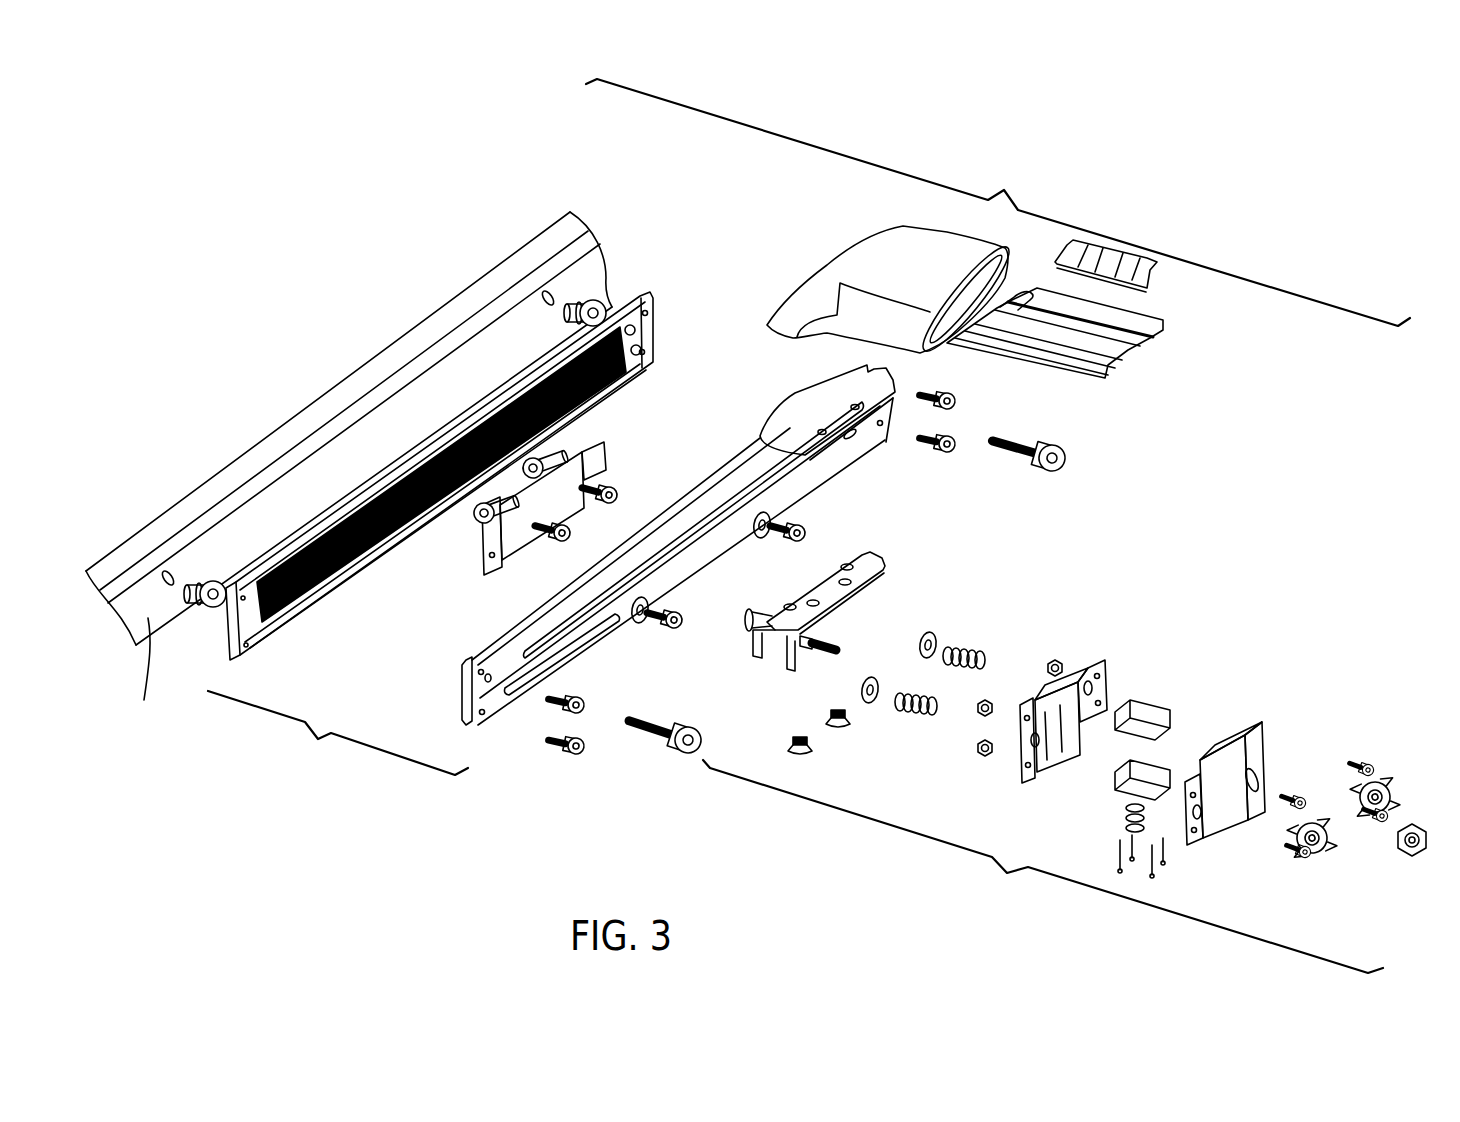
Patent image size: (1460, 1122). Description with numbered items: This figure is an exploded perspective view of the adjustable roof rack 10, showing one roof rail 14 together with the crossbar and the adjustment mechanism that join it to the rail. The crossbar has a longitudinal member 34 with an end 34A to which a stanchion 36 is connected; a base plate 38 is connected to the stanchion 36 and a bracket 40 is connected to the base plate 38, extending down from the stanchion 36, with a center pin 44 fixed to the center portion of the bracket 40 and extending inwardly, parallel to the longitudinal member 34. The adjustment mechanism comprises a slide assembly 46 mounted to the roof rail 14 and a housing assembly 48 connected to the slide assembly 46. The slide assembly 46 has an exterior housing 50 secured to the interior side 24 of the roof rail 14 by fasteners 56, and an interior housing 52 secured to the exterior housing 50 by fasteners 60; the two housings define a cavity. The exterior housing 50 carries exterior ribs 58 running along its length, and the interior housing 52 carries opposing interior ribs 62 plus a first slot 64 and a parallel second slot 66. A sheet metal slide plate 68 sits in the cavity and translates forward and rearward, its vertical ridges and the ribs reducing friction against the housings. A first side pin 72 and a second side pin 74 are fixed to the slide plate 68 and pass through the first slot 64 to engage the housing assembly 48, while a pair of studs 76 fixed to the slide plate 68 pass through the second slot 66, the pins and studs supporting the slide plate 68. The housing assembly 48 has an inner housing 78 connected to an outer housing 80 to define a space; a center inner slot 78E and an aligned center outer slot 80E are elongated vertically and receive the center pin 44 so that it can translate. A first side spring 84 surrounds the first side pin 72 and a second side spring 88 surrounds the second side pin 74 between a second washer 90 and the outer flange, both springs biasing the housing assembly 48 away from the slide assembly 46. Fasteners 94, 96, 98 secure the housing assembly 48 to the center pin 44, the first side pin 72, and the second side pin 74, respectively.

The roof rack 10 is at (998, 202).
The roof rail 14 is at (322, 402).
The interior side 24 is at (147, 675).
The longitudinal member 34 is at (1098, 384).
The end 34A is at (963, 352).
The stanchion 36 is at (845, 255).
The base plate 38 is at (790, 410).
The bracket 40 is at (870, 555).
The center pin 44 is at (845, 640).
The slide assembly 46 is at (338, 736).
The housing assembly 48 is at (1043, 866).
The exterior housing 50 is at (238, 668).
The interior housing 52 is at (462, 712).
The fasteners 56 is at (588, 300).
The exterior ribs 58 is at (295, 625).
The fasteners 60 is at (952, 410).
The interior ribs 62 is at (515, 650).
The first slot 64 is at (715, 512).
The second slot 66 is at (695, 565).
The slide plate 68 is at (595, 445).
The first side pin 72 is at (552, 548).
The second side pin 74 is at (605, 480).
The studs 76 is at (790, 525).
The inner housing 78 is at (1240, 738).
The center inner slot 78E is at (1268, 778).
The outer housing 80 is at (872, 705).
The center outer slot 80E is at (1040, 712).
The first side spring 84 is at (922, 722).
The second side spring 88 is at (980, 657).
The second washer 90 is at (935, 640).
The fastener 94 is at (1412, 858).
The fastener 96 is at (1305, 840).
The fastener 98 is at (1395, 793).